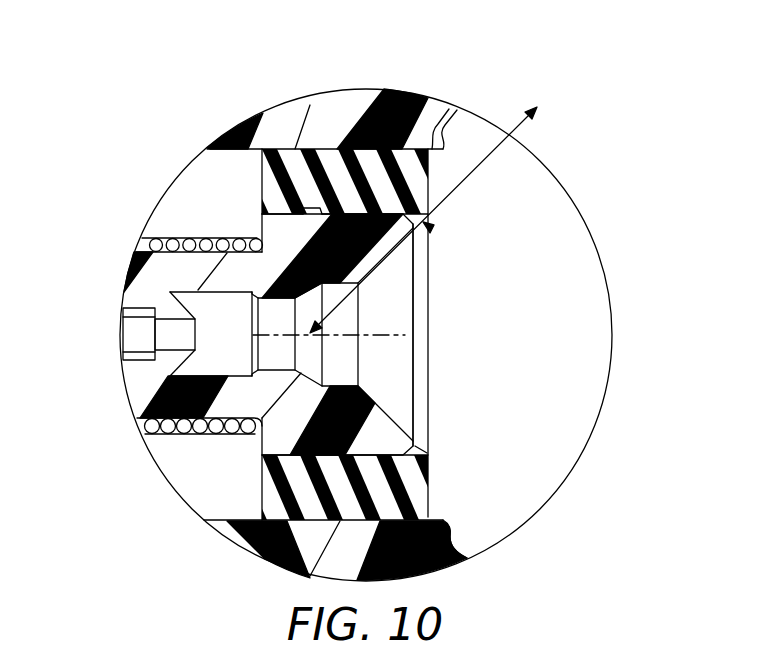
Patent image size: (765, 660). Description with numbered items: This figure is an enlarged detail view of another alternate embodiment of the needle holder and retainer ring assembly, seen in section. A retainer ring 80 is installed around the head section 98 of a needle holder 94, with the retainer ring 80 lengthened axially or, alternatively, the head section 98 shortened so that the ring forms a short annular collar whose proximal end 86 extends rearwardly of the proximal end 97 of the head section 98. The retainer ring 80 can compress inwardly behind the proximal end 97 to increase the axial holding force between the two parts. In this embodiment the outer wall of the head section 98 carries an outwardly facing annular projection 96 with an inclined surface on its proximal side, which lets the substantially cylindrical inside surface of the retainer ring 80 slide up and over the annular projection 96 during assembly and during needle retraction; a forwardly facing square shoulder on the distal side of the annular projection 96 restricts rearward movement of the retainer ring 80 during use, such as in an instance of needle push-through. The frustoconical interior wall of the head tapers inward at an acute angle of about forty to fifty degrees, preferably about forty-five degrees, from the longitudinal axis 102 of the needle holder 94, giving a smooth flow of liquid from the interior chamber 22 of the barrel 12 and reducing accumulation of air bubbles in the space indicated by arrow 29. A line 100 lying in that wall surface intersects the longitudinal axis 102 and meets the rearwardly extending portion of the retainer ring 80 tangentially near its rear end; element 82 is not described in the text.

The barrel 12 is at (310, 105).
The interior chamber 22 is at (540, 192).
The arrow 29 is at (430, 228).
The retainer ring 80 is at (270, 193).
The wall aperture surface 82 is at (337, 148).
The proximal end 86 is at (427, 435).
The needle holder 94 is at (130, 380).
The annular projection 96 is at (303, 207).
The proximal end 97 is at (415, 363).
The head section 98 is at (287, 437).
The line 100 is at (510, 133).
The longitudinal axis 102 is at (397, 334).